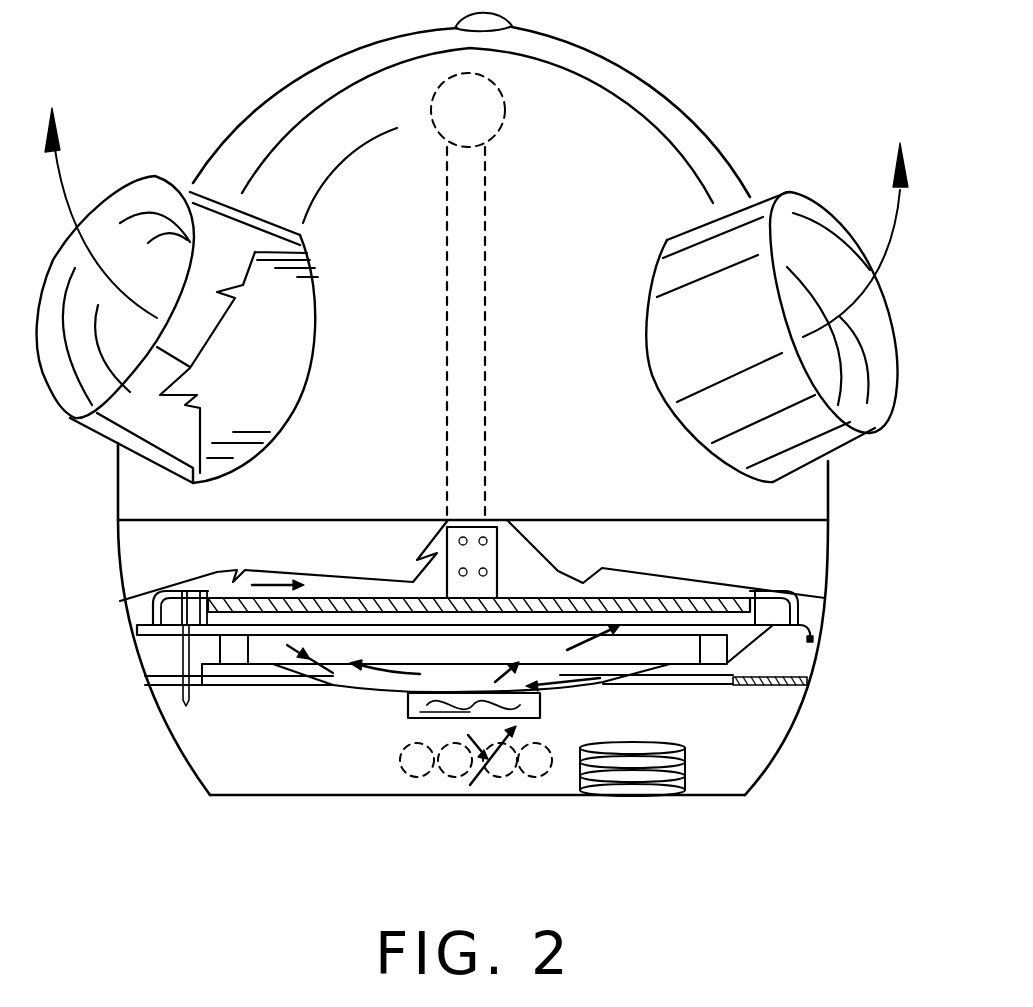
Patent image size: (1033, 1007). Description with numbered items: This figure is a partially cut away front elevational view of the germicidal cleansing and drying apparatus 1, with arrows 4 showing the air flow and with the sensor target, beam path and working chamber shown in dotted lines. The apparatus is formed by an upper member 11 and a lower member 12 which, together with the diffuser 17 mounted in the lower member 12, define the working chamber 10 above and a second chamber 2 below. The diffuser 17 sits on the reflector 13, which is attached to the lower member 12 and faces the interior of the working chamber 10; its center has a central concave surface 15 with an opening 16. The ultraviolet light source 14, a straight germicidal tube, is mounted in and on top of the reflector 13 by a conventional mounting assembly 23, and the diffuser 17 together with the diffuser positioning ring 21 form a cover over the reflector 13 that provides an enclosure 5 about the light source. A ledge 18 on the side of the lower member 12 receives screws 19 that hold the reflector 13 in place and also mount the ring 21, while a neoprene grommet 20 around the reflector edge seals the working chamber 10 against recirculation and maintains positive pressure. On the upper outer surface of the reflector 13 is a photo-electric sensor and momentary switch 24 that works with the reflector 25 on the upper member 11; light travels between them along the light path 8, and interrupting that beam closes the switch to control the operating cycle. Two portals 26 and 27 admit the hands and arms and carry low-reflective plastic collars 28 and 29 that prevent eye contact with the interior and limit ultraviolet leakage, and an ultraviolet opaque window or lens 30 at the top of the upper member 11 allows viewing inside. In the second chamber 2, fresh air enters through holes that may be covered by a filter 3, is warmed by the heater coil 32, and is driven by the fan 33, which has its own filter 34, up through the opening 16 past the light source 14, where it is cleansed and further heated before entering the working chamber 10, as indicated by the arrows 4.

The germicidal cleansing and drying apparatus 1 is at (576, 462).
The second chamber 2 is at (713, 742).
The filter 3 is at (397, 781).
The arrows 4 is at (63, 187).
The enclosure 5 is at (493, 628).
The light path 8 is at (477, 300).
The working chamber 10 is at (237, 362).
The upper member 11 is at (829, 487).
The lower member 12 is at (828, 550).
The reflector 13 is at (747, 648).
The ultraviolet light source 14 is at (377, 647).
The central concave surface 15 is at (347, 688).
The opening 16 is at (542, 707).
The diffuser 17 is at (688, 605).
The ledge 18 is at (772, 688).
The screws 19 is at (193, 587).
The grommet 20 is at (816, 636).
The diffuser positioning ring 21 is at (150, 610).
The mounting assembly 23 is at (228, 650).
The photo-electric sensor and momentary switch 24 is at (470, 558).
The reflector 25 is at (484, 125).
The portal 26 is at (310, 392).
The portal 27 is at (646, 354).
The plastic collar 28 is at (167, 178).
The plastic collar 29 is at (800, 190).
The ultraviolet opaque window or lens 30 is at (512, 20).
The heater coil 32 is at (665, 763).
The fan 33 is at (425, 710).
The filter 34 is at (453, 685).